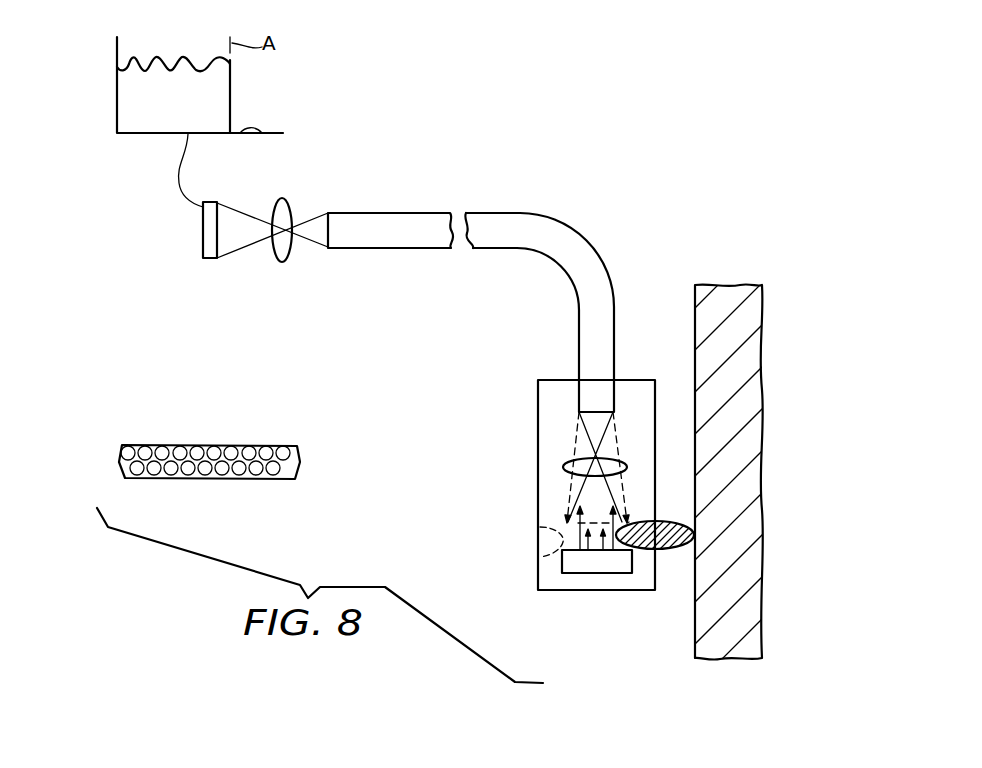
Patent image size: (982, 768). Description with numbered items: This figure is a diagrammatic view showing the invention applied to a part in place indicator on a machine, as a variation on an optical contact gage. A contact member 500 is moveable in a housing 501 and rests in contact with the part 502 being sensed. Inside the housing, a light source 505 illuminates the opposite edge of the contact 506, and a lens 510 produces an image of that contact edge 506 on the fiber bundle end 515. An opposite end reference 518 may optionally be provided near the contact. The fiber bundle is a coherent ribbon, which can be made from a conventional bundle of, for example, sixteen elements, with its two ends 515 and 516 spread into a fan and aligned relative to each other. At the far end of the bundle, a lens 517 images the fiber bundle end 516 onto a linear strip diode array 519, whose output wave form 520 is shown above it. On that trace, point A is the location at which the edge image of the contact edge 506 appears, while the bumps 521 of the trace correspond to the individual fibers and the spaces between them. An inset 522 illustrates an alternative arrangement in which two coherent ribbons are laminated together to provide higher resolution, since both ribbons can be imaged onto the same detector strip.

The contact member 500 is at (668, 549).
The housing 501 is at (640, 378).
The part 502 is at (745, 407).
The light source 505 is at (575, 574).
The contact edge 506 is at (630, 522).
The lens 510 is at (562, 467).
The fiber bundle end 515 is at (579, 412).
The fiber bundle end 516 is at (340, 246).
The lens 517 is at (282, 262).
The opposite end reference 518 is at (540, 561).
The linear strip diode array 519 is at (203, 236).
The output wave form 520 is at (117, 103).
The bumps 521 is at (135, 60).
The inset 522 is at (247, 426).